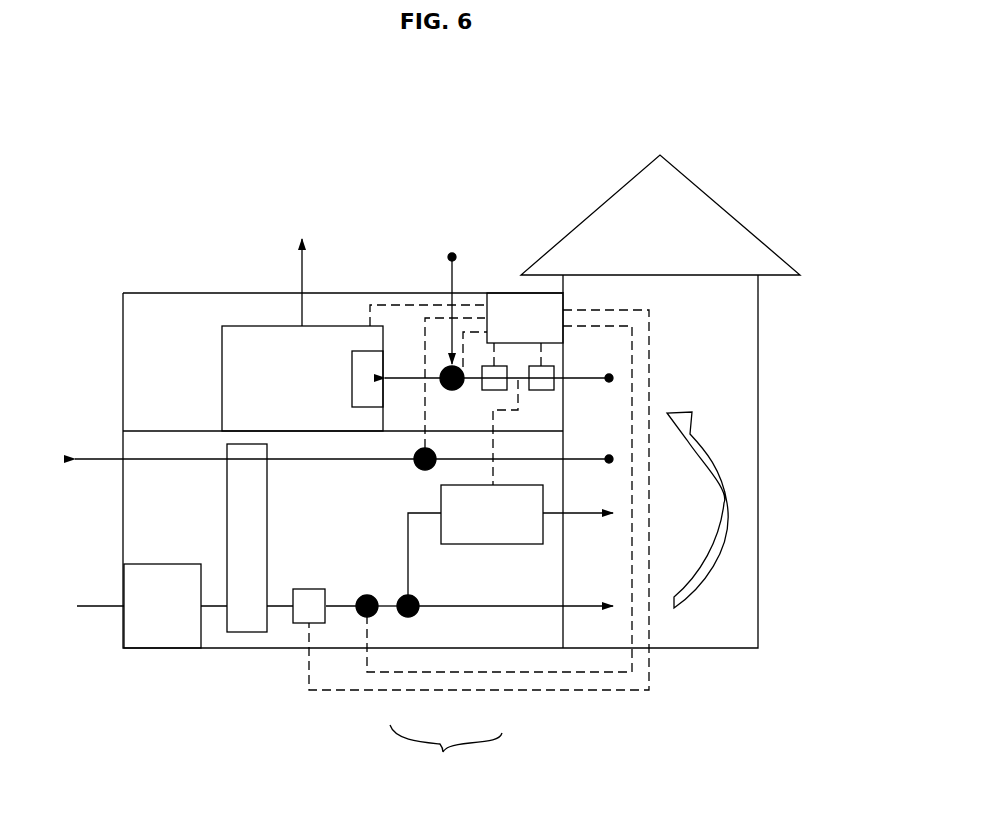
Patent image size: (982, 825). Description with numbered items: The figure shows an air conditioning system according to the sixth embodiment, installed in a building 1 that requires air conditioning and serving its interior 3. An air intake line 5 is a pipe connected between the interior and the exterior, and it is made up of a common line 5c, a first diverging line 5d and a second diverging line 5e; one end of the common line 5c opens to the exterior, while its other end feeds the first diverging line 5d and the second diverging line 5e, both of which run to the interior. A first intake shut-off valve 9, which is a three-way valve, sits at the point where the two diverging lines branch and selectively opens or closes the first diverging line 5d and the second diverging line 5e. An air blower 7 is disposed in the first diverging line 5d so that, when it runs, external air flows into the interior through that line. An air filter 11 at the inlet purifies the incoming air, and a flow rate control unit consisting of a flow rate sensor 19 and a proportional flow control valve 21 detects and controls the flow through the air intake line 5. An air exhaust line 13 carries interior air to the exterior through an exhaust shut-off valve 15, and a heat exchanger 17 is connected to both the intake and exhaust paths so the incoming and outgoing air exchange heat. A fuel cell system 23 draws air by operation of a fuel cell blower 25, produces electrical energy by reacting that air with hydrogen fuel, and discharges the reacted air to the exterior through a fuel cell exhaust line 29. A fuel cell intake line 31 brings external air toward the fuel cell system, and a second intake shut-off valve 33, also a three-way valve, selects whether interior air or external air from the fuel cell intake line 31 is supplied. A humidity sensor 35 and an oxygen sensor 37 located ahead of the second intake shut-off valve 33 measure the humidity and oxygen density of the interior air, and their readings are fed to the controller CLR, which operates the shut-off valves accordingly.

The building 1 is at (722, 180).
The interior 3 is at (711, 384).
The air intake line 5 is at (446, 749).
The common line 5c is at (387, 610).
The first diverging line 5d is at (427, 516).
The second diverging line 5e is at (498, 610).
The air blower 7 is at (527, 546).
The first intake shut-off valve 9 is at (404, 598).
The air filter 11 is at (133, 630).
The air exhaust line 13 is at (110, 458).
The exhaust shut-off valve 15 is at (414, 466).
The heat exchanger 17 is at (243, 495).
The flow rate sensor 19 is at (296, 626).
The proportional flow control valve 21 is at (360, 617).
The fuel cell system 23 is at (222, 354).
The fuel cell blower 25 is at (364, 355).
The fuel cell exhaust line 29 is at (302, 270).
The fuel cell intake line 31 is at (450, 275).
The second intake shut-off valve 33 is at (445, 366).
The humidity sensor 35 is at (497, 372).
The oxygen sensor 37 is at (556, 386).
The controller CLR is at (542, 305).